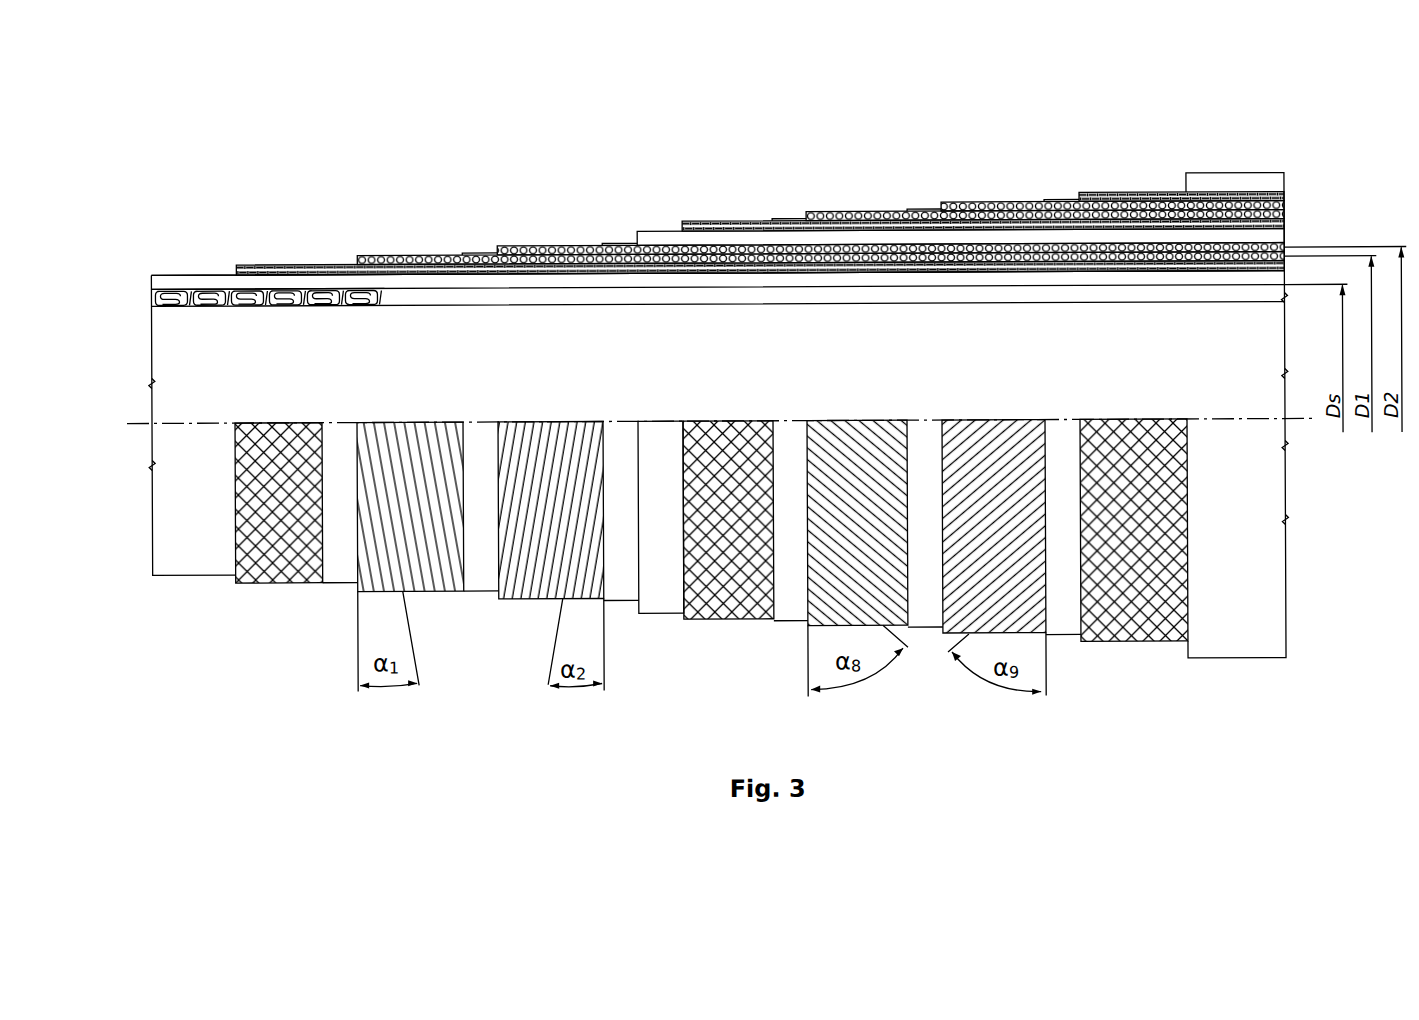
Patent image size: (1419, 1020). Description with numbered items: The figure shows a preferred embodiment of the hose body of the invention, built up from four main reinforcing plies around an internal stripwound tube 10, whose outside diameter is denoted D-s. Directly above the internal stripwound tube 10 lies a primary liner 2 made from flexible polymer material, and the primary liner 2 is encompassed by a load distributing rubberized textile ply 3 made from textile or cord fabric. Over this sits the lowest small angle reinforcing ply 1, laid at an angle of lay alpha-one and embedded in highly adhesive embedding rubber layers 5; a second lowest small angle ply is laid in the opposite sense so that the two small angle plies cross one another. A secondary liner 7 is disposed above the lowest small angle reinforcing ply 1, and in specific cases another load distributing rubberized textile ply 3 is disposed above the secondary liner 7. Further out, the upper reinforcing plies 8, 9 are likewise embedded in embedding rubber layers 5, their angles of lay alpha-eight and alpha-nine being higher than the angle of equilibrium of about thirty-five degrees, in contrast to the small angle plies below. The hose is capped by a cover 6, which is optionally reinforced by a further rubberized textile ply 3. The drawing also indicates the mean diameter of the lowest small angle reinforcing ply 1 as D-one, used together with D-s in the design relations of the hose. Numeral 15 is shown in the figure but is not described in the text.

The lowest small angle reinforcing ply 1 is at (388, 259).
The primary liner 2 is at (548, 252).
The load distributing rubberized textile ply 3 is at (290, 273).
The embedding rubber layer 5 is at (340, 266).
The cover 6 is at (1233, 178).
The secondary liner 7 is at (667, 238).
The upper reinforcing ply 8 is at (833, 215).
The upper reinforcing ply 9 is at (967, 206).
The internal stripwound tube 10 is at (197, 288).
The inner liner layer 15 is at (232, 281).